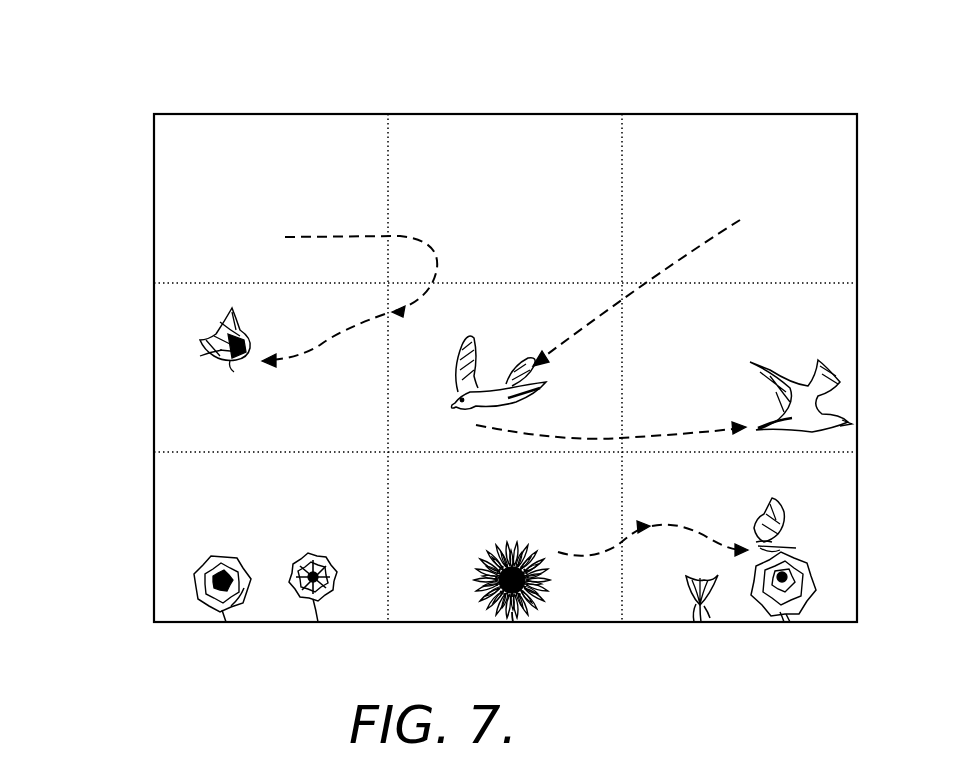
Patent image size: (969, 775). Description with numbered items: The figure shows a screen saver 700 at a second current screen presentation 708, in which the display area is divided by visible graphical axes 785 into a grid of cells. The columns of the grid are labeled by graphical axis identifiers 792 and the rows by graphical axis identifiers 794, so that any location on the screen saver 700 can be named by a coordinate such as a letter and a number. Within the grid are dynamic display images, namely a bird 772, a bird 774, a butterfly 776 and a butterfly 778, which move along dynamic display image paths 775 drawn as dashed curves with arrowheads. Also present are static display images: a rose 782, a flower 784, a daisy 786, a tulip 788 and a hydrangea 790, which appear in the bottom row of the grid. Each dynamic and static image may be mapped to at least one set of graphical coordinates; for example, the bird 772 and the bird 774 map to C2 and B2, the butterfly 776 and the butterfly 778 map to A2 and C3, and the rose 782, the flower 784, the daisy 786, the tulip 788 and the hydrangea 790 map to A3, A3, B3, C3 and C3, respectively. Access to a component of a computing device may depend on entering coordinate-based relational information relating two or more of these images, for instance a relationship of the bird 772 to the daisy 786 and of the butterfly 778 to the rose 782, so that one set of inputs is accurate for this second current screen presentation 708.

The screen saver 700 is at (128, 108).
The second current screen presentation 708 is at (716, 114).
The bird 772 is at (778, 376).
The bird 774 is at (458, 384).
The dynamic display image paths 775 is at (311, 237).
The butterfly 776 is at (236, 370).
The butterfly 778 is at (773, 500).
The rose 782 is at (219, 562).
The flower 784 is at (307, 551).
The visible graphical axes 785 is at (389, 208).
The daisy 786 is at (490, 560).
The tulip 788 is at (686, 588).
The hydrangea 790 is at (800, 575).
The graphical axis identifiers 792 is at (622, 116).
The graphical axis identifiers 794 is at (158, 464).